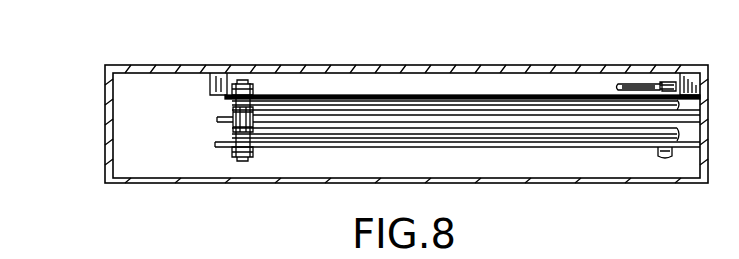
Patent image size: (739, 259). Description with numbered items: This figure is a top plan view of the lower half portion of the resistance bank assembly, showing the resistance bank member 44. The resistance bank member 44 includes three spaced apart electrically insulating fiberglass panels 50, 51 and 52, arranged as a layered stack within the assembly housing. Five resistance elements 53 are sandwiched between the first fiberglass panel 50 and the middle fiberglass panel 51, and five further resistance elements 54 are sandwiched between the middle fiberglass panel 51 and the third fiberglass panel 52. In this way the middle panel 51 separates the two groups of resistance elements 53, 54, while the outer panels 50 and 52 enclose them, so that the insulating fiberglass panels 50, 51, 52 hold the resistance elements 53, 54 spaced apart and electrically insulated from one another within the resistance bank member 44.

The resistance bank member 44 is at (514, 95).
The fiberglass panel 50 is at (227, 97).
The fiberglass panel 51 is at (217, 119).
The fiberglass panel 52 is at (217, 146).
The resistance elements 53 is at (297, 107).
The resistance elements 54 is at (272, 133).